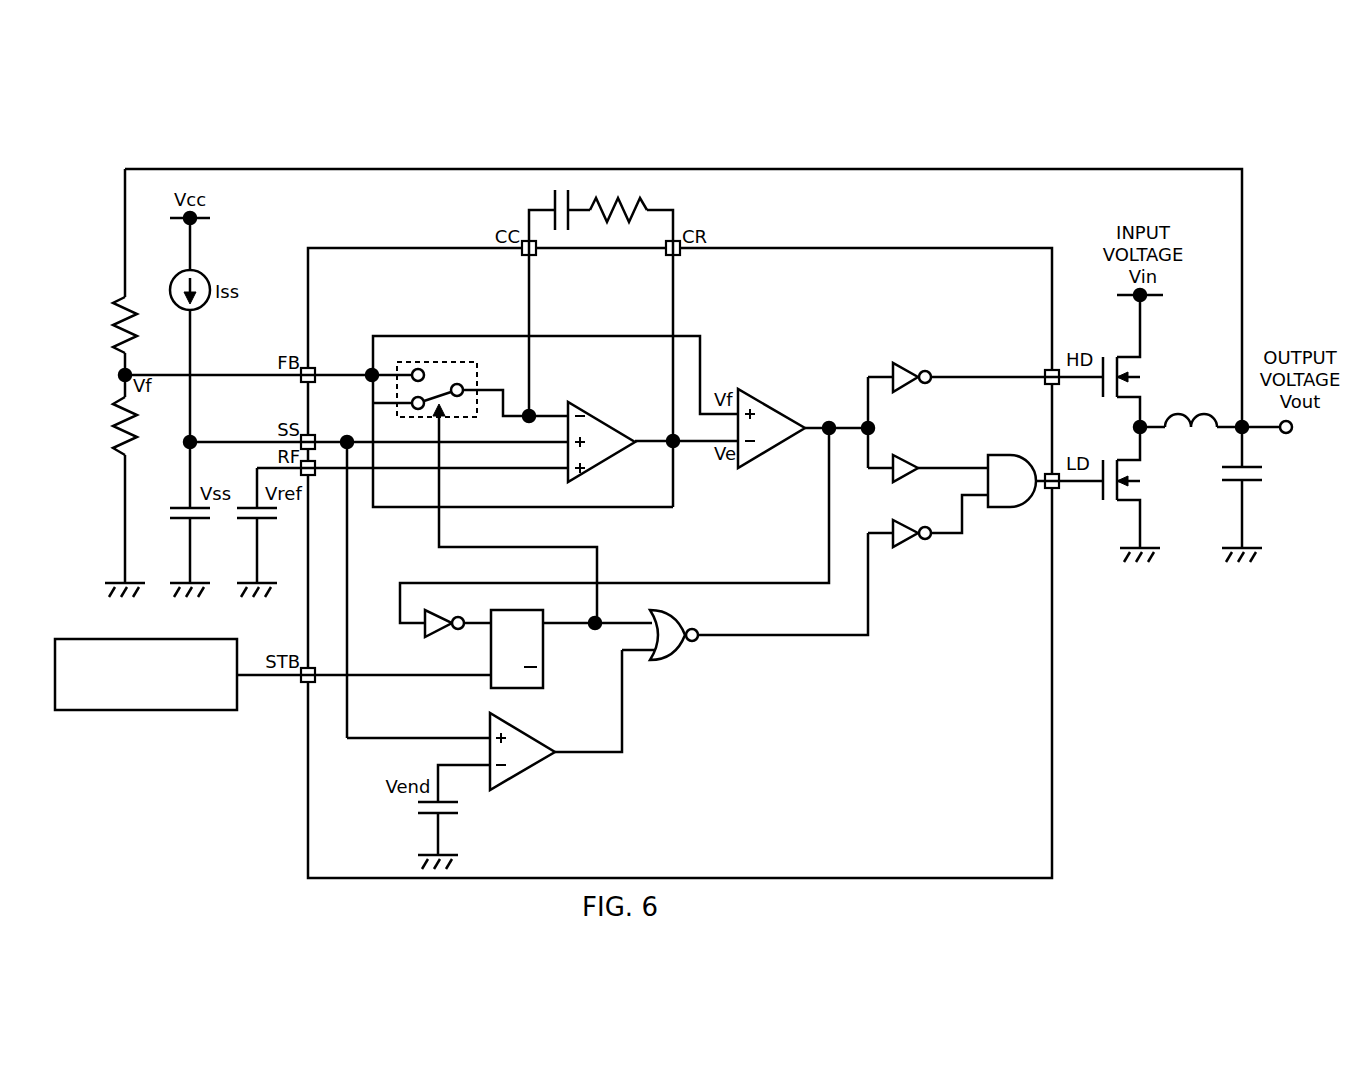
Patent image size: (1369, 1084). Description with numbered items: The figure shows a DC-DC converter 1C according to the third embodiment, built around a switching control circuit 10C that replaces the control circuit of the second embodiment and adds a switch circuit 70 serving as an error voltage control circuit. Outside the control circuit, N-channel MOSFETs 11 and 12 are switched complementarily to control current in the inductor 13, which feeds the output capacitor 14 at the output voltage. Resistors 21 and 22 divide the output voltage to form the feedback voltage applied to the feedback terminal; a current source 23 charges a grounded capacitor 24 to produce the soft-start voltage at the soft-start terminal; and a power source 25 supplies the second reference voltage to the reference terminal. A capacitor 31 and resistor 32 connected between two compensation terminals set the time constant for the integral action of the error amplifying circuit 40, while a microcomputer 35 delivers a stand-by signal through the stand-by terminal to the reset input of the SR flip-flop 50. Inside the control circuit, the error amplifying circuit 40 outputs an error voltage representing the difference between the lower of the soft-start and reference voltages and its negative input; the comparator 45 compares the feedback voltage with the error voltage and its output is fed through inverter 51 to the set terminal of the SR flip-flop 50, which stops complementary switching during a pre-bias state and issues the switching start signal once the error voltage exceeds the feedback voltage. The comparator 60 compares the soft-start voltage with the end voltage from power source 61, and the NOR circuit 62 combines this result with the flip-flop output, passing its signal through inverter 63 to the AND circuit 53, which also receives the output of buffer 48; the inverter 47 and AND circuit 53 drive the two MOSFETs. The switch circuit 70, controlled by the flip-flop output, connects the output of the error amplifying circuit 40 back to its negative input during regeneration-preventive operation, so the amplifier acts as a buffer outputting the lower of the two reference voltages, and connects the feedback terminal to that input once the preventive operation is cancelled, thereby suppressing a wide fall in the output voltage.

The DC-DC converter 1C is at (505, 128).
The switching control circuit 10C is at (308, 264).
The N-channel MOSFET 11 is at (1128, 356).
The N-channel MOSFET 12 is at (1128, 500).
The inductor 13 is at (1192, 413).
The capacitor 14 is at (1256, 483).
The resistor 21 is at (128, 297).
The resistor 22 is at (130, 452).
The current source 23 is at (206, 281).
The capacitor 24 is at (200, 520).
The power source 25 is at (265, 520).
The capacitor 31 is at (552, 206).
The resistor 32 is at (645, 222).
The microcomputer 35 is at (205, 710).
The error amplifying circuit 40 is at (606, 410).
The comparator 45 is at (766, 458).
The inverter 47 is at (905, 386).
The buffer 48 is at (905, 463).
The SR flip-flop 50 is at (543, 651).
The inverter 51 is at (430, 628).
The AND circuit 53 is at (1020, 508).
The comparator 60 is at (523, 770).
The power source 61 is at (421, 812).
The NOR circuit 62 is at (680, 661).
The inverter 63 is at (905, 541).
The switch circuit 70 is at (432, 362).